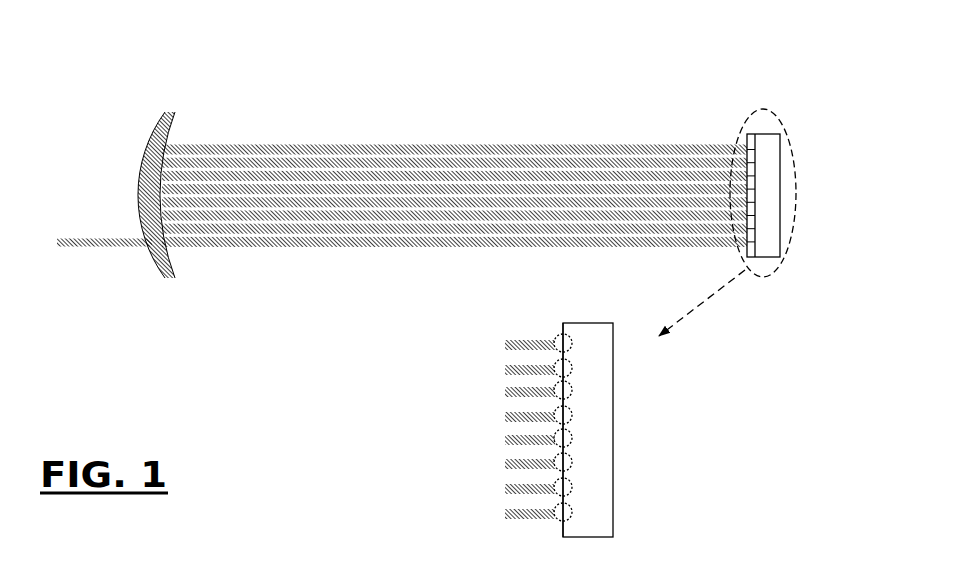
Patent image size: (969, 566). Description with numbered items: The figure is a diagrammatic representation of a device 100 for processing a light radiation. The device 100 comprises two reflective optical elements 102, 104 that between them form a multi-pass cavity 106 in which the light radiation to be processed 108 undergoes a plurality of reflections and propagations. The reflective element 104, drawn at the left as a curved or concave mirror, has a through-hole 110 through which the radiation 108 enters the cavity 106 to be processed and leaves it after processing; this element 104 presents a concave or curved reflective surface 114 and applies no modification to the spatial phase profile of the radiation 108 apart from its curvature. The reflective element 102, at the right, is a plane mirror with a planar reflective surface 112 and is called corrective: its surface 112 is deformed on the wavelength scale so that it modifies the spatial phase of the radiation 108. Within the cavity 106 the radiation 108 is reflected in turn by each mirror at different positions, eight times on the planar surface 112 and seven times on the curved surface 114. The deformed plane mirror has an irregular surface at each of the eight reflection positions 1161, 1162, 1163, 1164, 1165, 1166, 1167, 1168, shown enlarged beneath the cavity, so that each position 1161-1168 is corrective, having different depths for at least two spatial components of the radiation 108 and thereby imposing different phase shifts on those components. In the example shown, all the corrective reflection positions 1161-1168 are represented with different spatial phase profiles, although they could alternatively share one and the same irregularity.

The device 100 is at (176, 71).
The reflective optical element 102 is at (652, 302).
The reflective optical element 104 is at (162, 192).
The multi-pass cavity 106 is at (403, 126).
The light radiation to be processed 108 is at (67, 234).
The through-hole 110 is at (148, 240).
The planar reflective surface 112 is at (748, 139).
The concave or curved reflective surface 114 is at (167, 134).
The corrective reflection position 1161 is at (557, 345).
The corrective reflection position 1162 is at (557, 370).
The corrective reflection position 1163 is at (557, 392).
The corrective reflection position 1164 is at (557, 417).
The corrective reflection position 1165 is at (557, 440).
The corrective reflection position 1166 is at (557, 464).
The corrective reflection position 1167 is at (557, 489).
The corrective reflection position 1168 is at (557, 514).